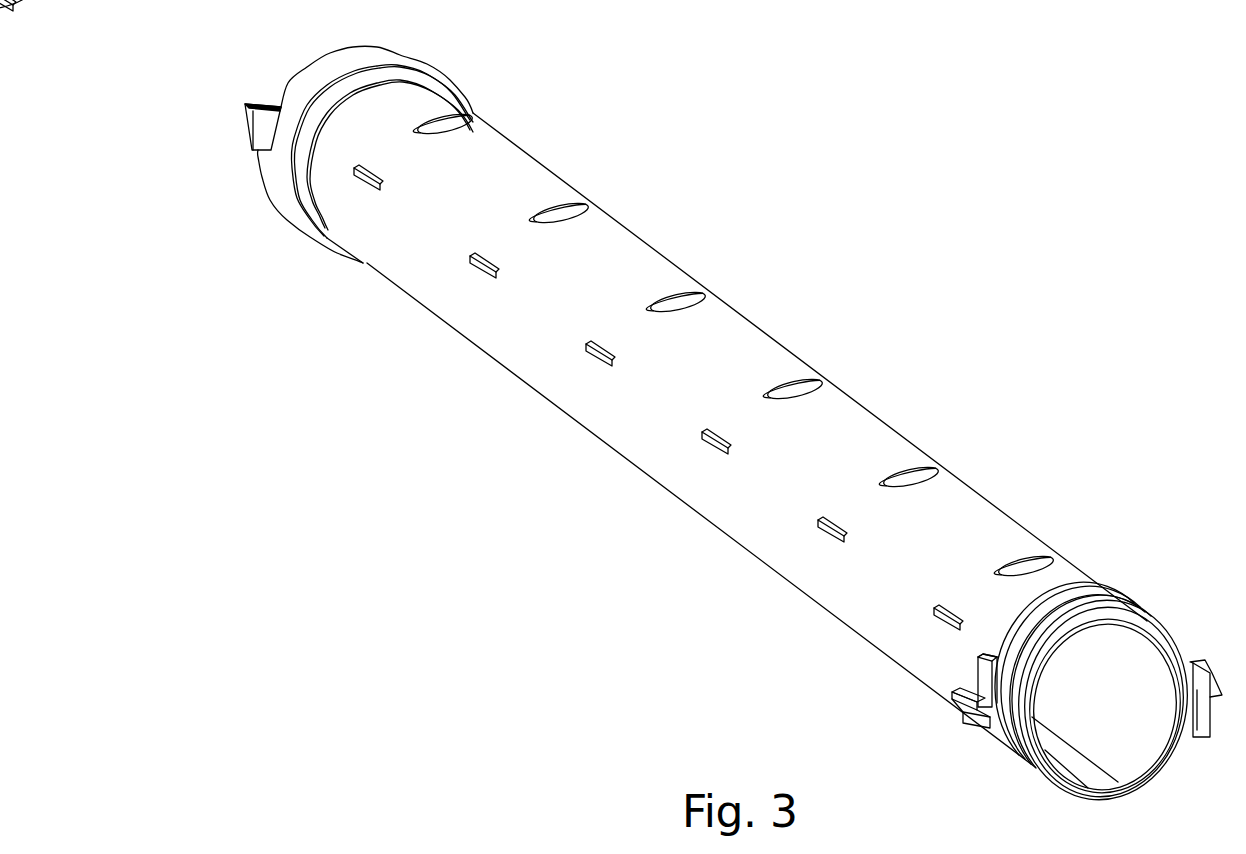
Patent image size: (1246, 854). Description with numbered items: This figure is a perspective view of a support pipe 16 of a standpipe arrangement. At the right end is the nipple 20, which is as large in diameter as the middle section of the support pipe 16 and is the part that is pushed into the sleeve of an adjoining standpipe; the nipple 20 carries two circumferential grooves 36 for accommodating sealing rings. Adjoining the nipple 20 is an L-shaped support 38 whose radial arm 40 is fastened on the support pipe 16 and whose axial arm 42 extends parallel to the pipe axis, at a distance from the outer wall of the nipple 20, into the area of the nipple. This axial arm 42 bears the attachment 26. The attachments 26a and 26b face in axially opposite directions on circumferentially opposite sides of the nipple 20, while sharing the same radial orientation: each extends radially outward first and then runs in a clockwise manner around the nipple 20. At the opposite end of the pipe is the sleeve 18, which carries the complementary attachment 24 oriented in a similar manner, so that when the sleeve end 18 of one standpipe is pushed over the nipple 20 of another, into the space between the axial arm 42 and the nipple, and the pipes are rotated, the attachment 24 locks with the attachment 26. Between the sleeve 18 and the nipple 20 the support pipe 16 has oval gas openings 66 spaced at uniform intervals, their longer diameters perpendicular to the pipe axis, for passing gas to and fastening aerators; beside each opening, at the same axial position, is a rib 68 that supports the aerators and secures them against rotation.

The support pipe 16 is at (774, 315).
The sleeve 18 is at (278, 177).
The nipple 20 is at (1145, 627).
The complementary attachment 24 is at (250, 150).
The attachment 26 is at (985, 733).
The attachment 26a is at (977, 660).
The attachment 26b is at (1208, 740).
The circumferential groove 36 is at (1075, 592).
The L-shaped support 38 is at (960, 742).
The radial arm 40 is at (953, 695).
The axial arm 42 is at (960, 713).
The gas opening 66 is at (820, 386).
The rib 68 is at (826, 539).